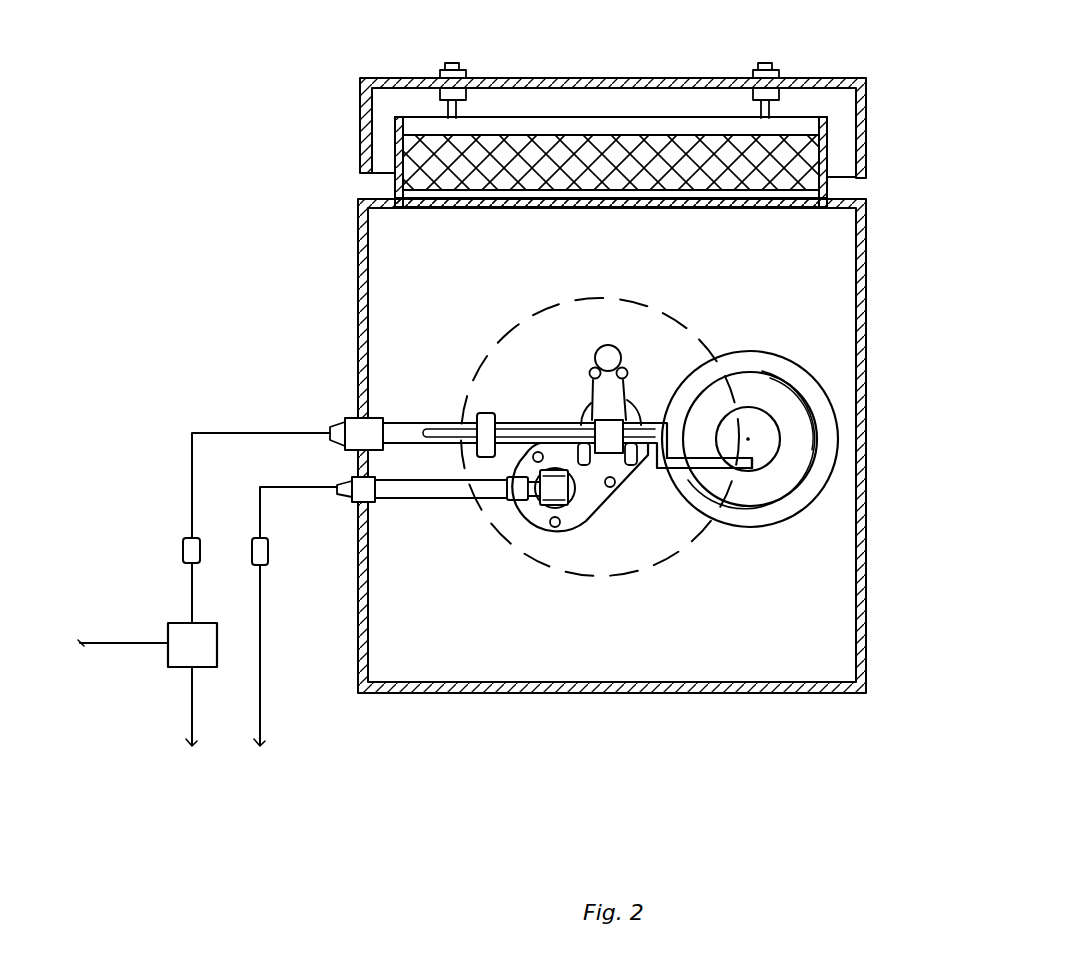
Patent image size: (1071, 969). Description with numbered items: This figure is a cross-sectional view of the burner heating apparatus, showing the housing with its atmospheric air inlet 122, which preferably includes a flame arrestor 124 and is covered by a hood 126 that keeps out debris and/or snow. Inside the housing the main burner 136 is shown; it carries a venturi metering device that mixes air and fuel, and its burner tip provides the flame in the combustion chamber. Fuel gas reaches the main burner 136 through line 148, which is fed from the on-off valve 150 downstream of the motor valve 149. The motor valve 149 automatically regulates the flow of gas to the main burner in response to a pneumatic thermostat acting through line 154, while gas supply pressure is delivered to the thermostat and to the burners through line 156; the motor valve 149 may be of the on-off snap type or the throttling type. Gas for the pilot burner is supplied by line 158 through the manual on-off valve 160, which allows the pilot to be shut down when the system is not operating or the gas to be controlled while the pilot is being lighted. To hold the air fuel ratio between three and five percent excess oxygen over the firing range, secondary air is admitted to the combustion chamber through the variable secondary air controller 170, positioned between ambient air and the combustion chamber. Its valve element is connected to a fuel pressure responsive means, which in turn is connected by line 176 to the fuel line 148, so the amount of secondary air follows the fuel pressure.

The atmospheric air inlet 122 is at (812, 201).
The flame arrestor 124 is at (598, 150).
The hood 126 is at (362, 133).
The main burner 136 is at (615, 458).
The line 148 is at (228, 432).
The motor valve 149 is at (168, 625).
The on-off valve 150 is at (183, 548).
The line 154 is at (100, 648).
The line 156 is at (185, 720).
The line 158 is at (308, 487).
The manual on-off valve 160 is at (268, 548).
The secondary air controller 170 is at (798, 393).
The line 176 is at (748, 470).